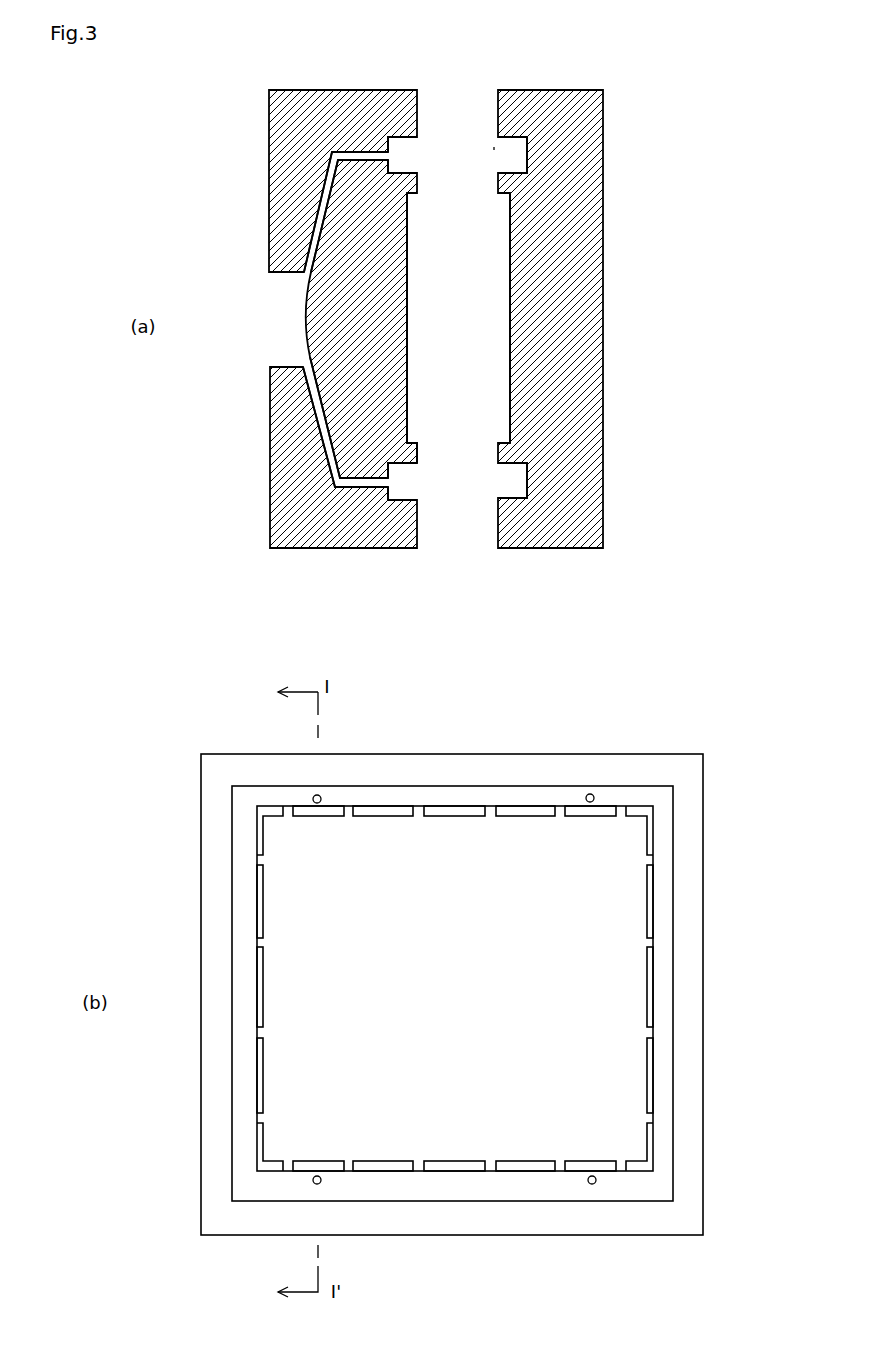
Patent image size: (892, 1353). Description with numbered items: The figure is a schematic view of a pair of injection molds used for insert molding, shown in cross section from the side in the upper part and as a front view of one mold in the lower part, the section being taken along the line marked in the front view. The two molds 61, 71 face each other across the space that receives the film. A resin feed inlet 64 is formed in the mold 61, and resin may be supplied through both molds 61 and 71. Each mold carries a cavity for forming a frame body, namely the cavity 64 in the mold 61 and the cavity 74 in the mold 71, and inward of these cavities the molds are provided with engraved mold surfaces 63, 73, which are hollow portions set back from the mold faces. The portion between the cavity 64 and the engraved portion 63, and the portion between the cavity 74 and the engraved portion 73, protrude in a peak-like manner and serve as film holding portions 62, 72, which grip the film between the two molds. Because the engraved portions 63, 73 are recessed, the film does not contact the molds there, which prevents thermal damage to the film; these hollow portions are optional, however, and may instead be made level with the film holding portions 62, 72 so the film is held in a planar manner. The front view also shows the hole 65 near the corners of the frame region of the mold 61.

The mold 61 is at (343, 90).
The film holding portion 62 is at (420, 455).
The engraved mold surface 63 is at (413, 288).
The resin feed inlet 64 is at (422, 486).
The upper through hole 65 is at (406, 158).
The mold 71 is at (605, 180).
The film holding portion 72 is at (498, 192).
The engraved mold surface 73 is at (507, 318).
The cavity 74 is at (494, 147).